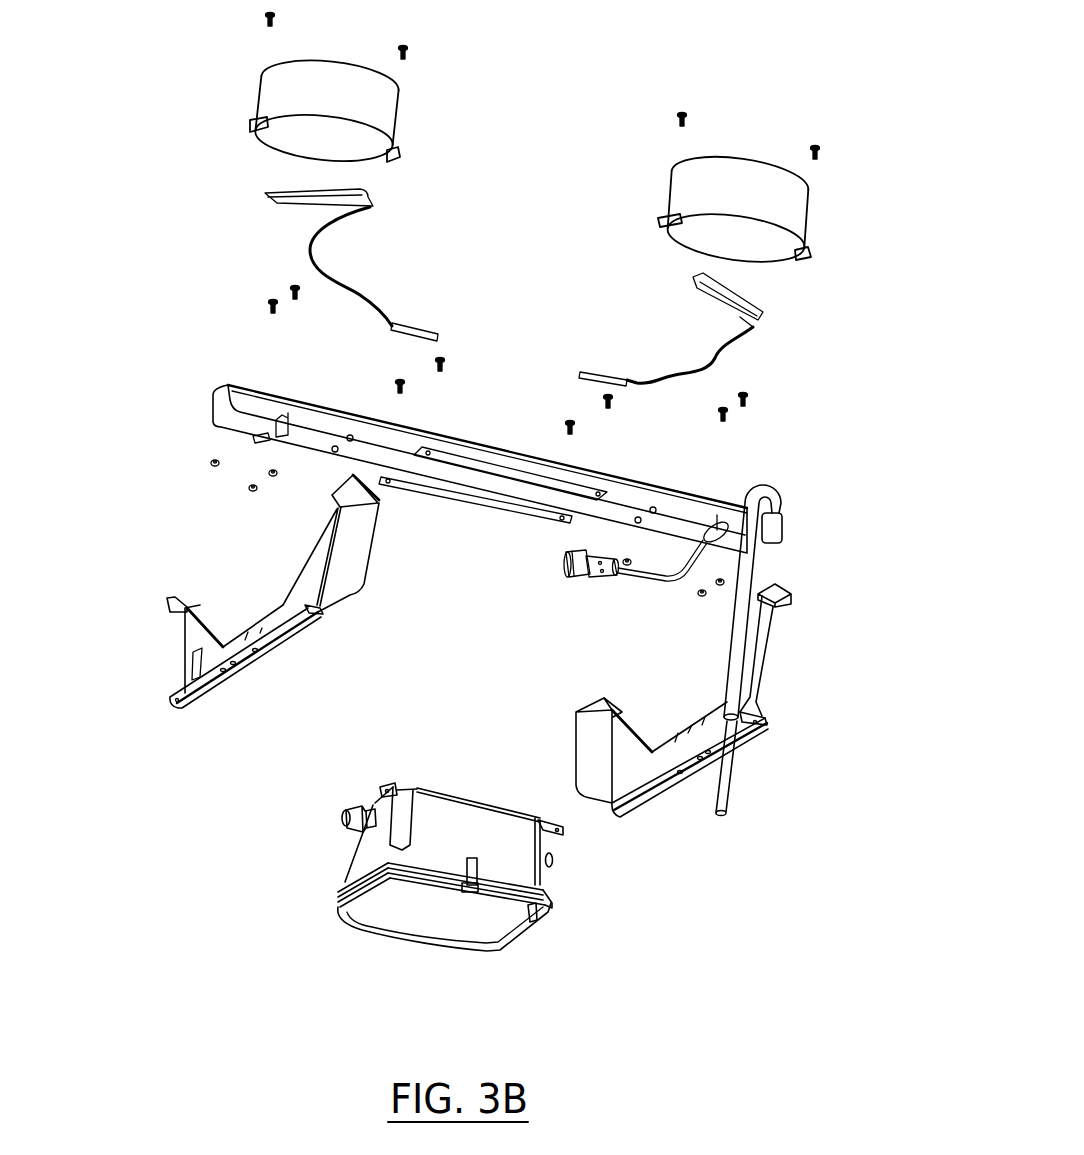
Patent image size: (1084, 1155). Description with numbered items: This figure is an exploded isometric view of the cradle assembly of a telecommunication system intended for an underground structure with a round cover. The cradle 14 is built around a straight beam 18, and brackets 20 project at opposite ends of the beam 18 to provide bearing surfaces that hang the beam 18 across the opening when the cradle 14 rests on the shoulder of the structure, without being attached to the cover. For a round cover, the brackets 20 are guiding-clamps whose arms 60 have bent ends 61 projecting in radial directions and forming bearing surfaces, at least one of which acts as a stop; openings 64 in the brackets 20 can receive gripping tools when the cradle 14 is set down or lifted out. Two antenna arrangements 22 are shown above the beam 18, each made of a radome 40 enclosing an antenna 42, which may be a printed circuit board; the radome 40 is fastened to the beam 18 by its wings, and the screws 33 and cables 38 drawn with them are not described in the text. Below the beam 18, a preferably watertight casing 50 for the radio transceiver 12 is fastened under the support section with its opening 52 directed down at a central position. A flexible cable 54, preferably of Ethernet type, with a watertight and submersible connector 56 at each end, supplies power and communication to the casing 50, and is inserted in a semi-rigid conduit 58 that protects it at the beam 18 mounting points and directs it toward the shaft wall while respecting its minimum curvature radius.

The radio transceiver 12 is at (579, 889).
The cradle 14 is at (315, 748).
The beam 18 is at (420, 425).
The brackets 20 is at (290, 665).
The antenna arrangement 22 is at (427, 112).
The screws 33 is at (575, 432).
The cable 38 is at (360, 293).
The radome 40 is at (331, 60).
The antenna 42 is at (308, 203).
The casing 50 is at (362, 849).
The opening 52 is at (416, 930).
The cable 54 is at (733, 777).
The connector 56 is at (591, 578).
The semi-rigid conduit 58 is at (760, 568).
The arms 60 is at (373, 563).
The bent ends 61 is at (362, 496).
The openings 64 is at (185, 671).